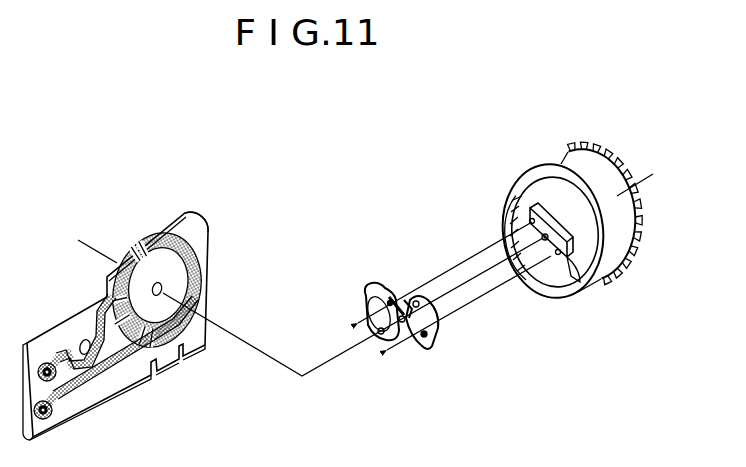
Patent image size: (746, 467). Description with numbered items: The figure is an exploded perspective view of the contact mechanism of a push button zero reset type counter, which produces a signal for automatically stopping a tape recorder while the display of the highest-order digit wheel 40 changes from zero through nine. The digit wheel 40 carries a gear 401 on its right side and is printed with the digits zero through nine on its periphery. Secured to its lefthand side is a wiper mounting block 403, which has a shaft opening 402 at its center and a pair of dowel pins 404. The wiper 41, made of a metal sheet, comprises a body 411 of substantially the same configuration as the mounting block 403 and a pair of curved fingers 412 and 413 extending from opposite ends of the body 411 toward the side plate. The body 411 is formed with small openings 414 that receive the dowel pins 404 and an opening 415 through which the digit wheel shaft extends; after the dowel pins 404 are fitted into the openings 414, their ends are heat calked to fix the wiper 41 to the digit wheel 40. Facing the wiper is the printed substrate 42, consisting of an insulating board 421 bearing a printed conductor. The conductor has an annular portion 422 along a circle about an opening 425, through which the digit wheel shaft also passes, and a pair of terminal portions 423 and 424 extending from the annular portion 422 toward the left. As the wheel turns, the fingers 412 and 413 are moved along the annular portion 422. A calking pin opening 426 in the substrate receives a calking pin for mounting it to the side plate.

The digit wheel 40 is at (482, 131).
The gear 401 is at (597, 172).
The shaft opening 402 is at (543, 243).
The wiper mounting block 403 is at (565, 250).
The dowel pins 404 is at (530, 222).
The wiper 41 is at (369, 391).
The body 411 is at (413, 298).
The curved finger 412 is at (445, 331).
The curved finger 413 is at (370, 310).
The small openings 414 is at (389, 312).
The opening 415 is at (410, 302).
The printed substrate 42 is at (126, 172).
The insulating board 421 is at (196, 217).
The annular portion 422 is at (196, 256).
The terminal portion 423 is at (116, 380).
The terminal portion 424 is at (92, 380).
The opening 425 is at (166, 290).
The calking pin opening 426 is at (80, 340).